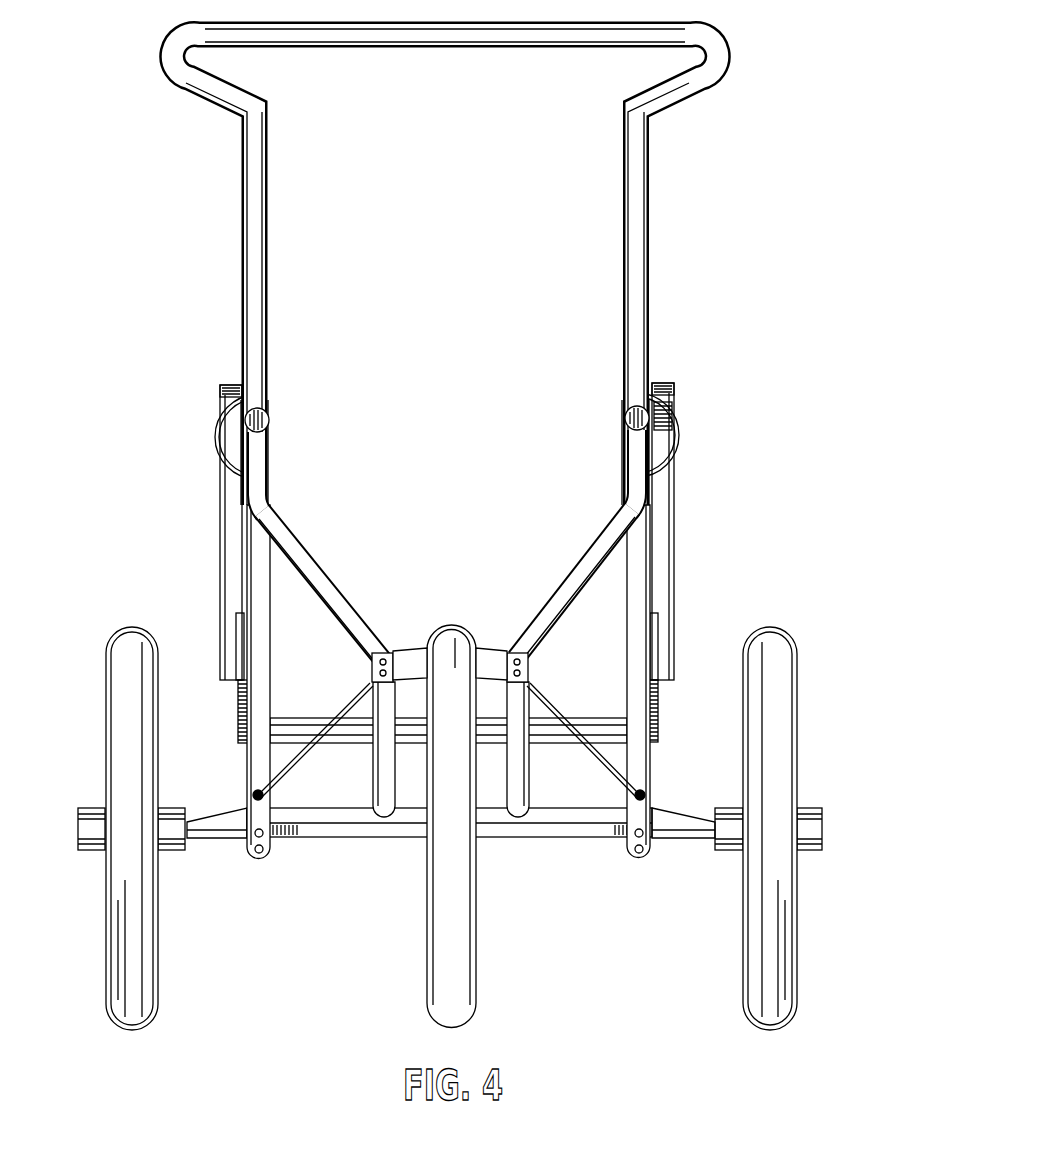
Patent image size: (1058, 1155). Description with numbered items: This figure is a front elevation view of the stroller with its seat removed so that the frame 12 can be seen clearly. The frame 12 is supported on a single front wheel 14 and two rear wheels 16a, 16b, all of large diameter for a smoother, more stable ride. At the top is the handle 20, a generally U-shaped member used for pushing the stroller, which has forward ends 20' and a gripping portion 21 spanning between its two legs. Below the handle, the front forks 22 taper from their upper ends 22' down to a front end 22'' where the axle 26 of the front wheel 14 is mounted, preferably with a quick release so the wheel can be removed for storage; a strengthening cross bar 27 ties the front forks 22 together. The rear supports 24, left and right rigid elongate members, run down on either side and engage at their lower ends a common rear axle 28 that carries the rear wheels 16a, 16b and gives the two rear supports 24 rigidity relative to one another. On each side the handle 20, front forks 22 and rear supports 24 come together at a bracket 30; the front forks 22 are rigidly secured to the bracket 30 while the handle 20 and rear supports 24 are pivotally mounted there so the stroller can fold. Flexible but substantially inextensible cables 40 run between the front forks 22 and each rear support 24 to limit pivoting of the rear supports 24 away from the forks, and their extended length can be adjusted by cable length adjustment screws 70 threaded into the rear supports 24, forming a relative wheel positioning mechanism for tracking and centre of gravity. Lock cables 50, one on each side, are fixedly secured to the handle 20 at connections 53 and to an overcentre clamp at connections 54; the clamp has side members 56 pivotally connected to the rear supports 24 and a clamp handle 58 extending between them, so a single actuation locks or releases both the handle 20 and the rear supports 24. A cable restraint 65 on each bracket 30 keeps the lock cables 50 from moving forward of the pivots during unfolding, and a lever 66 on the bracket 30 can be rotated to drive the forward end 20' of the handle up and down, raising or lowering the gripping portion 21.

The frame 12 is at (652, 240).
The front wheel 14 is at (430, 960).
The rear wheel 16a is at (128, 637).
The rear wheel 16b is at (762, 640).
The handle 20 is at (449, 269).
The forward ends 20' is at (445, 415).
The gripping portion 21 is at (692, 32).
The front forks 22 is at (447, 585).
The upper ends 22' is at (447, 472).
The front end 22'' is at (465, 802).
The rear supports 24 is at (247, 756).
The axle 26 is at (410, 840).
The strengthening cross bar 27 is at (382, 660).
The rear axle 28 is at (205, 828).
The bracket 30 is at (622, 424).
The cables 40 is at (330, 718).
The lock cables 50 is at (222, 563).
The connections 53 is at (224, 388).
The connections 54 is at (232, 680).
The side members 56 is at (663, 712).
The handle 58 is at (605, 720).
The cable restraint 65 is at (215, 442).
The lever 66 is at (665, 420).
The cable length adjustment screws 70 is at (262, 800).